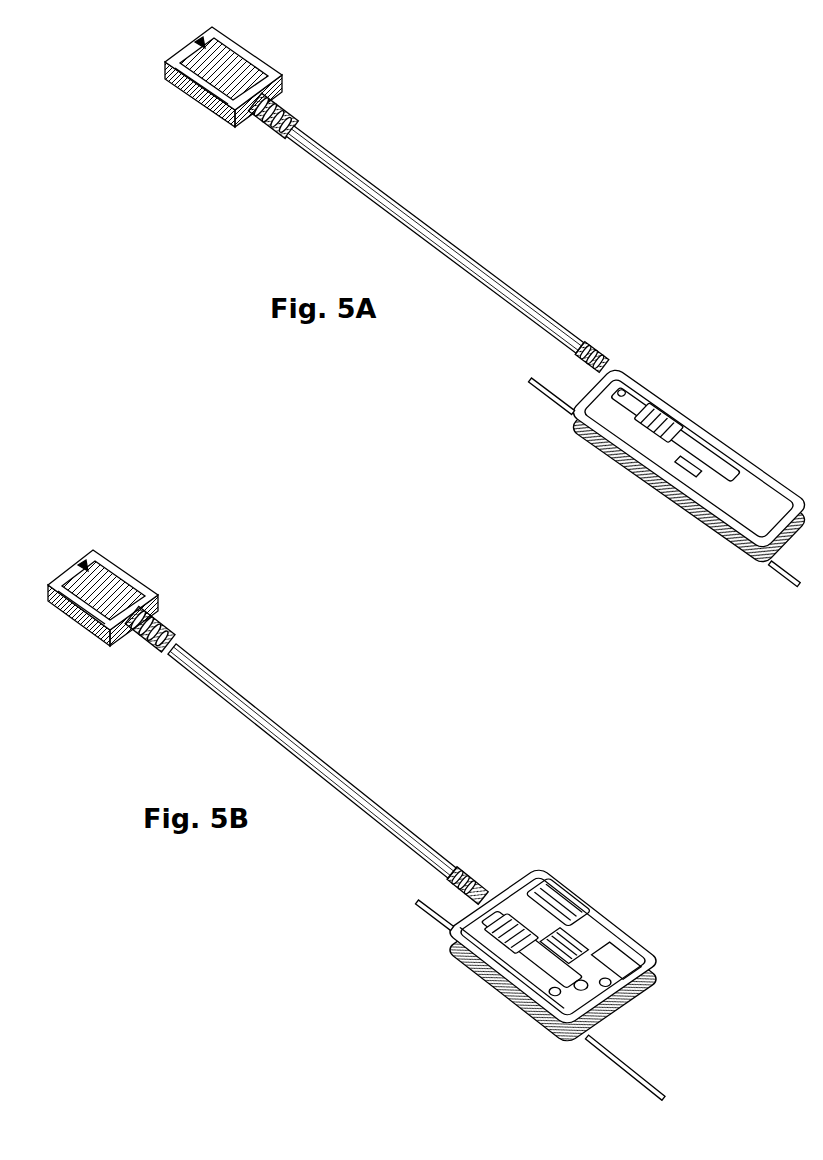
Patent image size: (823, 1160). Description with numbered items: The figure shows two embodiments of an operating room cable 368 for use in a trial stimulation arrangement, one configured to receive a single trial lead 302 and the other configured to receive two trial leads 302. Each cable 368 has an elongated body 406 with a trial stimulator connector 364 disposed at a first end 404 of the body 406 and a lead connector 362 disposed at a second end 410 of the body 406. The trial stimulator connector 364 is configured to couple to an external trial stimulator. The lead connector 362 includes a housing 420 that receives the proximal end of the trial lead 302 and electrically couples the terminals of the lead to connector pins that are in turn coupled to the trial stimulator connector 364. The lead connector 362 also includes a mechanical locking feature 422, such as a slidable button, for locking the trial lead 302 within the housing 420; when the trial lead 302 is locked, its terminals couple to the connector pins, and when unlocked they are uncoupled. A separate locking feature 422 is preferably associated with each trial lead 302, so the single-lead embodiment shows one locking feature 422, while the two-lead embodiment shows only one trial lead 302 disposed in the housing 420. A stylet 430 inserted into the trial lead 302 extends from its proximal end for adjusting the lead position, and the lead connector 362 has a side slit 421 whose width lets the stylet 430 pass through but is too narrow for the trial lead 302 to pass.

In FIG. 5A, the trial lead 302 is at (780, 584).
In FIG. 5B, the trial lead 302 is at (615, 1067).
In FIG. 5A, the lead connector 362 is at (723, 447).
In FIG. 5B, the lead connector 362 is at (610, 937).
In FIG. 5A, the trial stimulator connector 364 is at (262, 70).
In FIG. 5B, the trial stimulator connector 364 is at (73, 607).
In FIG. 5A, the cable 368 is at (374, 190).
In FIG. 5B, the cable 368 is at (243, 714).
In FIG. 5A, the first end 404 is at (240, 180).
In FIG. 5B, the first end 404 is at (124, 672).
In FIG. 5A, the elongated body 406 is at (378, 187).
In FIG. 5B, the elongated body 406 is at (233, 687).
In FIG. 5A, the second end 410 is at (689, 410).
In FIG. 5B, the second end 410 is at (554, 902).
In FIG. 5A, the housing 420 is at (760, 480).
In FIG. 5B, the housing 420 is at (635, 958).
In FIG. 5A, the side slit 421 is at (634, 490).
In FIG. 5B, the side slit 421 is at (479, 983).
In FIG. 5A, the locking feature 422 is at (667, 427).
In FIG. 5B, the locking feature 422 is at (540, 895).
In FIG. 5A, the stylet 430 is at (533, 383).
In FIG. 5B, the stylet 430 is at (422, 910).